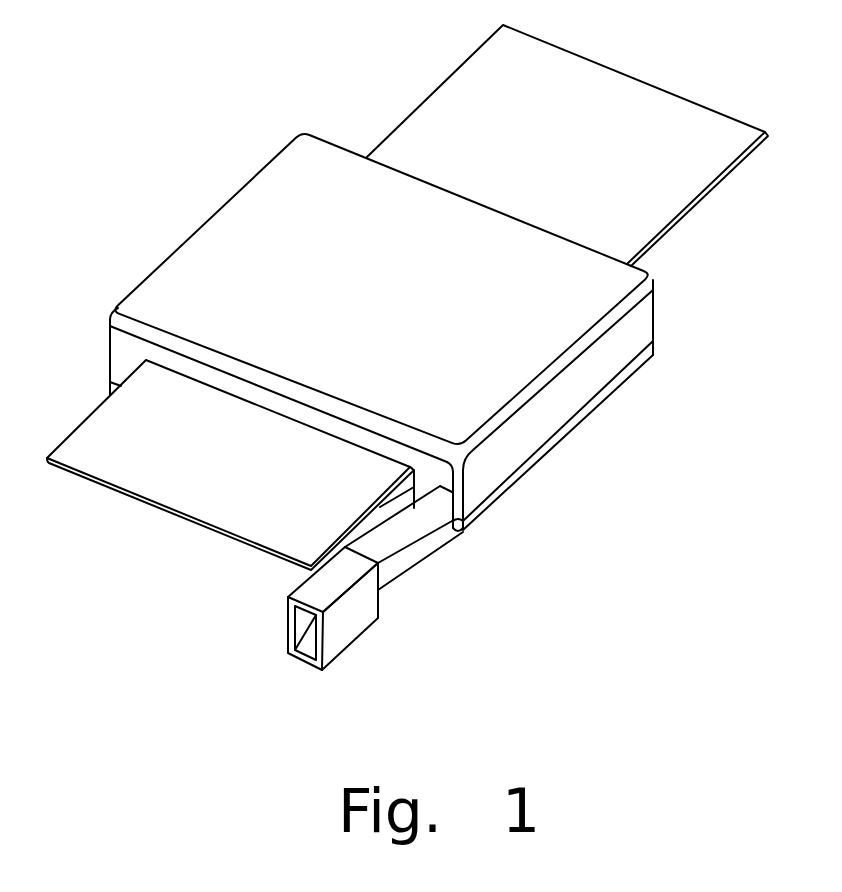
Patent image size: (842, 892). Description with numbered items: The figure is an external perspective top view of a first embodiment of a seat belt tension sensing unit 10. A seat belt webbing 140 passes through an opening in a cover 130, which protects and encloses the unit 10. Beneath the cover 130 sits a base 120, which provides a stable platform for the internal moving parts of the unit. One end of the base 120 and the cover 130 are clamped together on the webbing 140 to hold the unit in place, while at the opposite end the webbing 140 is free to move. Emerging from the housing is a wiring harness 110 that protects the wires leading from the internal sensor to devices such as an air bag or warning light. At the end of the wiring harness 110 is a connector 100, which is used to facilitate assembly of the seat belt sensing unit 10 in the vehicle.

The seat belt tension sensing unit 10 is at (172, 213).
The connector 100 is at (338, 640).
The wiring harness 110 is at (403, 547).
The base 120 is at (593, 400).
The cover 130 is at (641, 318).
The seat belt webbing 140 is at (699, 171).